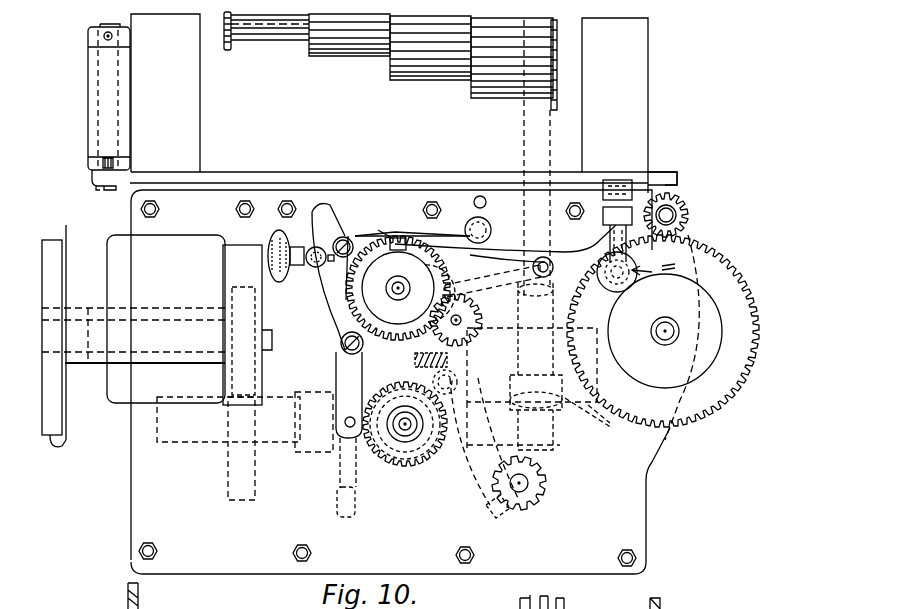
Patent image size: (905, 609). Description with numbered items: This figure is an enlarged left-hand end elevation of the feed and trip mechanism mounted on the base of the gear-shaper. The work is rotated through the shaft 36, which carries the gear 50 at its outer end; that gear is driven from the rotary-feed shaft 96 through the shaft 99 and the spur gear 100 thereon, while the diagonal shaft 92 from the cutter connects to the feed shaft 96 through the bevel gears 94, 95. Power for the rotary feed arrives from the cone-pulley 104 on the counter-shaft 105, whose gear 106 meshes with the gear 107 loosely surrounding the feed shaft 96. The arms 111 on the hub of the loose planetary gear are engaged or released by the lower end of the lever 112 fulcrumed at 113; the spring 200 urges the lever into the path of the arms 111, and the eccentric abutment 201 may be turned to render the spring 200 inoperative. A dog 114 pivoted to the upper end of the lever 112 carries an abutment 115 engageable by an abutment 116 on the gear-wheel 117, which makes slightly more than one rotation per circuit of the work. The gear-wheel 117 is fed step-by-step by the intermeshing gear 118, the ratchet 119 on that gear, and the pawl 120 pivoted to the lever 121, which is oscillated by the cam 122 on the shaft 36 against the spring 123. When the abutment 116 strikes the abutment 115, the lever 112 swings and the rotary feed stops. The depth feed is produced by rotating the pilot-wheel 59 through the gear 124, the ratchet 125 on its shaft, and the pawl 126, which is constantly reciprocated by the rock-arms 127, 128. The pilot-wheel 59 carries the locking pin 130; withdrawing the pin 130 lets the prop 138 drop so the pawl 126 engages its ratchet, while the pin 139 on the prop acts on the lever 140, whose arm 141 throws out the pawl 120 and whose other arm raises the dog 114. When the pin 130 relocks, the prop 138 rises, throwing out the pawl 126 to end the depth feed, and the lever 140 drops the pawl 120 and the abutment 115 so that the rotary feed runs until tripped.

The rock-arm 128 is at (90, 38).
The rock-arm 127 is at (92, 164).
The diagonal shaft 92 is at (547, 145).
The prop 138 is at (618, 182).
The pin 139 is at (610, 233).
The pawl 126 is at (667, 177).
The ratchet 125 is at (672, 198).
The gear 124 is at (690, 222).
The pilot-wheel 59 is at (722, 385).
The locking pin 130 is at (612, 295).
The lever 140 is at (503, 205).
The arm or finger 141 is at (493, 274).
The pawl 120 is at (461, 231).
The gear-wheel 117 is at (396, 318).
The gear 118 is at (476, 314).
The ratchet 119 is at (469, 352).
The spring 123 is at (473, 381).
The bevel gear 95 is at (515, 442).
The cam 122 is at (539, 396).
The bevel gear 94 is at (613, 422).
The spring 200 is at (262, 258).
The gear 106 is at (240, 305).
The counter-shaft 105 is at (152, 365).
The cone-pulley 104 is at (75, 344).
The lever 112 is at (330, 310).
The dog or latch 114 is at (352, 205).
The eccentric abutment 201 is at (313, 205).
The abutment 115 is at (383, 205).
The abutment 116 is at (410, 205).
The fulcrum 113 is at (340, 345).
The shaft 96 is at (188, 432).
The gear 107 is at (232, 470).
The arms 111 is at (360, 502).
The spur gear 100 is at (378, 455).
The shaft 99 is at (412, 432).
The lever 121 is at (470, 500).
The gear 50 is at (543, 495).
The shaft 36 is at (521, 492).